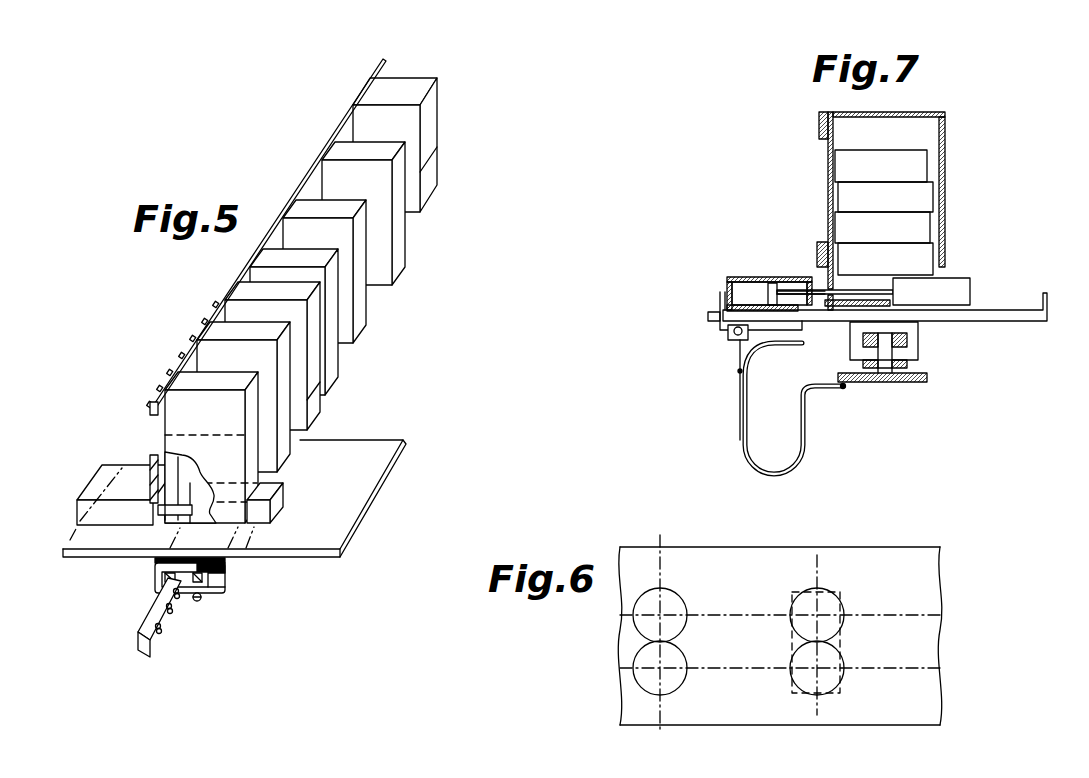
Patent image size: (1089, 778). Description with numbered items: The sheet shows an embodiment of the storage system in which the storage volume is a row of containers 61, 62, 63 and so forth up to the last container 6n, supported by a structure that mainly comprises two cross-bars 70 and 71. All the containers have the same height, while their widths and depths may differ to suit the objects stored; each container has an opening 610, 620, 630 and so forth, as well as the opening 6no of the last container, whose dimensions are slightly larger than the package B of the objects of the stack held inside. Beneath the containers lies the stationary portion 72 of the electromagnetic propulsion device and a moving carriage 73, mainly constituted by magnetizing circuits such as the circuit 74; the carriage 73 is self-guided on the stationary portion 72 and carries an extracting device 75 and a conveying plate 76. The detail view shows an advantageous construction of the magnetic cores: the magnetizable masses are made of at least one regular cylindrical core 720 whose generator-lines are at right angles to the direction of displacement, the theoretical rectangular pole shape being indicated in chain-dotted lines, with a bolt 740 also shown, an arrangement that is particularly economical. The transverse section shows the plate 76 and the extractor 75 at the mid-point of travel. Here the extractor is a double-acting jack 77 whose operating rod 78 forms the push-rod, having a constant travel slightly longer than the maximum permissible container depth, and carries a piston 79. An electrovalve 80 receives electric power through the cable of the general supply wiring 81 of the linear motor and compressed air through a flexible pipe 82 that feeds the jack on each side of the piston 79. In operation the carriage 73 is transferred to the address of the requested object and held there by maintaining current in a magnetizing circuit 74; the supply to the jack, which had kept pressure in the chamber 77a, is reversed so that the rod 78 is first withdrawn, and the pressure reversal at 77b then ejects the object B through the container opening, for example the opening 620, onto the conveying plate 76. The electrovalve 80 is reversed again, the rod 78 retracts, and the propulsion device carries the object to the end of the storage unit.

In FIG. 5, the uppermost box of stack 6n is at (433, 133).
In FIG. 5, the lower part of uppermost box 6no is at (433, 185).
In FIG. 5, the container 61 is at (252, 408).
In FIG. 5, the container 62 is at (243, 360).
In FIG. 5, the container 63 is at (277, 318).
In FIG. 5, the lower part of third box 630 is at (303, 423).
In FIG. 5, the opening 610 is at (250, 508).
In FIG. 7, the opening 620 is at (955, 278).
In FIG. 5, the package B is at (280, 502).
In FIG. 5, the cross-bar 70 is at (152, 404).
In FIG. 7, the cross-bar 70 is at (819, 134).
In FIG. 5, the cross-bar 71 is at (154, 470).
In FIG. 7, the cross-bar 71 is at (830, 253).
In FIG. 5, the stationary portion 72 is at (150, 644).
In FIG. 7, the stationary portion 72 is at (887, 383).
In FIG. 5, the core 720 is at (182, 598).
In FIG. 6, the core 720 is at (640, 658).
In FIG. 5, the moving carriage 73 is at (237, 568).
In FIG. 7, the moving carriage 73 is at (918, 335).
In FIG. 5, the magnetizing circuit 74 is at (222, 592).
In FIG. 7, the magnetizing circuit 74 is at (906, 357).
In FIG. 5, the bolt 740 is at (201, 600).
In FIG. 6, the bolt 740 is at (845, 641).
In FIG. 5, the extracting device 75 is at (95, 478).
In FIG. 7, the extracting device 75 is at (722, 279).
In FIG. 5, the conveying plate 76 is at (350, 535).
In FIG. 7, the conveying plate 76 is at (1010, 310).
In FIG. 7, the double-acting jack 77 is at (736, 278).
In FIG. 7, the chamber 77a is at (808, 282).
In FIG. 7, the chamber 77b is at (750, 283).
In FIG. 5, the operating rod 78 is at (162, 518).
In FIG. 7, the operating rod 78 is at (853, 293).
In FIG. 7, the piston 79 is at (776, 283).
In FIG. 7, the electrovalve 80 is at (728, 333).
In FIG. 7, the general supply wiring 81 is at (788, 350).
In FIG. 7, the flexible pipe 82 is at (740, 418).